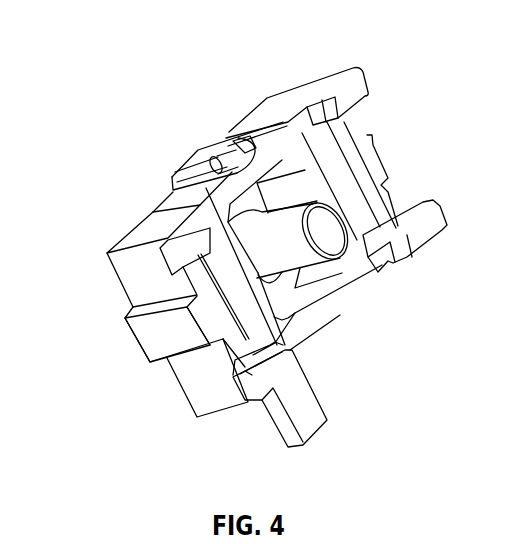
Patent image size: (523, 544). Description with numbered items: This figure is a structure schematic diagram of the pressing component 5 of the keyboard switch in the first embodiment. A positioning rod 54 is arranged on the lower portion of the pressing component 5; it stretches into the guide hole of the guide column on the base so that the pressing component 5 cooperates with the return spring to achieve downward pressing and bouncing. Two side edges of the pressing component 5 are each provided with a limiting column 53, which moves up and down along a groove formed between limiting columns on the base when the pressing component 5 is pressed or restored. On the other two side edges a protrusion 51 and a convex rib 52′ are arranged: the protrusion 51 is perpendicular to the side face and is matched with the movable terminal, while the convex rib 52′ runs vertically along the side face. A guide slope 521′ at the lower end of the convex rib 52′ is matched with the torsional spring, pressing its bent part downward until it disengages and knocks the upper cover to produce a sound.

The pressing component 5 is at (408, 113).
The protrusion 51 is at (283, 420).
The convex rib 52′ is at (192, 157).
The guide slope 521′ is at (228, 140).
The limiting column 53 is at (150, 345).
The positioning rod 54 is at (327, 228).